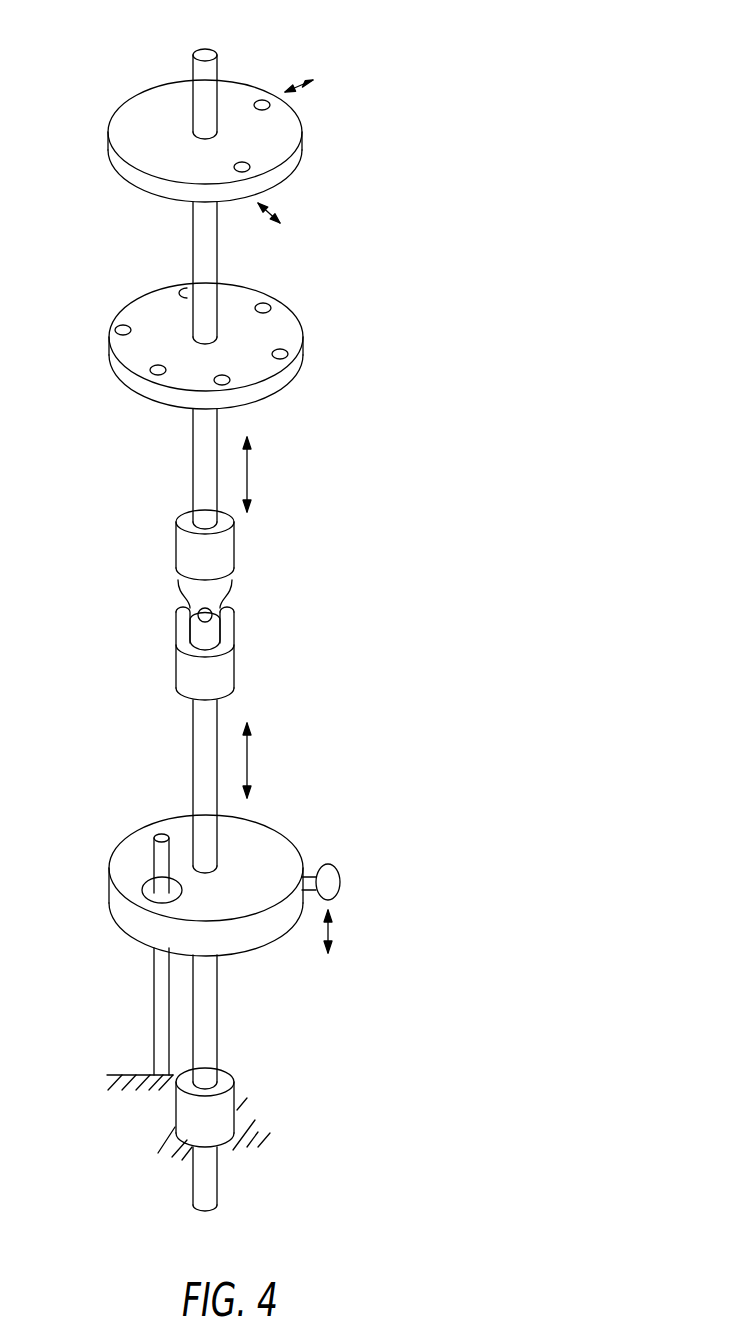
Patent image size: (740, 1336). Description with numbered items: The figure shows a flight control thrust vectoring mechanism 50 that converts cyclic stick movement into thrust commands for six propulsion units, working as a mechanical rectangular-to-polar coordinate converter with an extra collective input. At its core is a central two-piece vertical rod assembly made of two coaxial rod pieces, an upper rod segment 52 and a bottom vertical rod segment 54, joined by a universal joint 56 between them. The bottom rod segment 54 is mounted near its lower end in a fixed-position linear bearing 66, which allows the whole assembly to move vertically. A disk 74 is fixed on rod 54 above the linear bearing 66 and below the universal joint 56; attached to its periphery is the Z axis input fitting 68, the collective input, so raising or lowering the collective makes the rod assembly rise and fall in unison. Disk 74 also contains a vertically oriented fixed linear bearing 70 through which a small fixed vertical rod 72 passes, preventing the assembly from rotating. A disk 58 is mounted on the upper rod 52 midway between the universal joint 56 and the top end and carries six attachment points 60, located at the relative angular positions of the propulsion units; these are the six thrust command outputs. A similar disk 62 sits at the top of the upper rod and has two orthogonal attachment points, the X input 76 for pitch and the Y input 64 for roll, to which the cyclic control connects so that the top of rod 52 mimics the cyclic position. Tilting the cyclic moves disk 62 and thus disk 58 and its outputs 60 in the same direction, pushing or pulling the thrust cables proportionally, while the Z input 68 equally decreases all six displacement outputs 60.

The mechanism 50 is at (510, 248).
The upper rod segment 52 is at (197, 453).
The bottom vertical rod segment 54 is at (193, 738).
The universal joint 56 is at (162, 619).
The disk 58 is at (280, 330).
The attachment points 60 is at (187, 292).
The disk 62 is at (230, 92).
The Y input 64 is at (262, 105).
The linear bearing 66 is at (233, 1093).
The Z axis input fitting 68 is at (328, 882).
The linear bearing 70 is at (143, 892).
The fixed vertical rod 72 is at (157, 845).
The disk 74 is at (273, 828).
The X input 76 is at (243, 165).